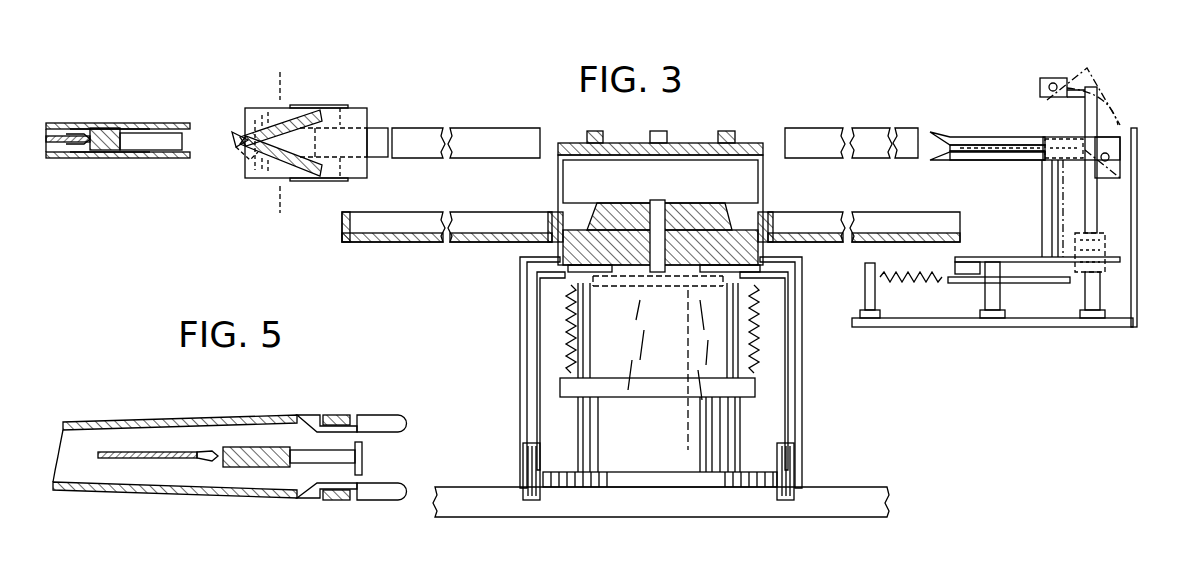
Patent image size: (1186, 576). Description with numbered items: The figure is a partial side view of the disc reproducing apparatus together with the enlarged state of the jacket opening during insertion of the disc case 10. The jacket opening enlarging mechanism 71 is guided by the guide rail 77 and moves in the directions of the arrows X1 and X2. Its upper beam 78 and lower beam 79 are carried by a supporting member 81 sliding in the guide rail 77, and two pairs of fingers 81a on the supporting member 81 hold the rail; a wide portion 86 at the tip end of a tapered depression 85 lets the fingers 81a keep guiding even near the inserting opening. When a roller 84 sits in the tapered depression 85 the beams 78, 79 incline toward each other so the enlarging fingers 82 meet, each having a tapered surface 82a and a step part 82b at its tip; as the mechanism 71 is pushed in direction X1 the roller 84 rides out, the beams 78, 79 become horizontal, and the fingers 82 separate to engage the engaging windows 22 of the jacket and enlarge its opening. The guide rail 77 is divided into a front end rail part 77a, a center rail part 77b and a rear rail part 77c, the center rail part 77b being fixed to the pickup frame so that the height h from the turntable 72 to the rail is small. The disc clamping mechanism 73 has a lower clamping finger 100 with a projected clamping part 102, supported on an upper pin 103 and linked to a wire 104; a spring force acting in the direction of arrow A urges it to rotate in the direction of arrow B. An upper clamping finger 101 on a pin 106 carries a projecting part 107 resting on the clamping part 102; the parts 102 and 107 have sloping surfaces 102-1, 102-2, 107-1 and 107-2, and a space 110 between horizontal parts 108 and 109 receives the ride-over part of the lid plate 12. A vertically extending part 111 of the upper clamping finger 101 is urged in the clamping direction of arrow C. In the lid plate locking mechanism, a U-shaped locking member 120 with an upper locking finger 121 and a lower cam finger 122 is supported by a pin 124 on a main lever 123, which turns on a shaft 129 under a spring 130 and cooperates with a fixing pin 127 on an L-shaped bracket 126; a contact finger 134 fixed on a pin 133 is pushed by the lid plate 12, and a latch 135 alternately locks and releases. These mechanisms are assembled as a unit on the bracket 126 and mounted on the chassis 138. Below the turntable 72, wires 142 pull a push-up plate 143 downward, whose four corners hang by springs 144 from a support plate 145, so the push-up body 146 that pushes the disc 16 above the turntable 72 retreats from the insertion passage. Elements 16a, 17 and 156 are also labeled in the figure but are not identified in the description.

In FIG. 3, the disc case 10 is at (108, 123).
In FIG. 5, the disc case 10 is at (111, 412).
In FIG. 3, the lid plate 12 is at (172, 150).
In FIG. 5, the lid plate 12 is at (363, 460).
In FIG. 3, the disc 16 is at (62, 142).
In FIG. 5, the disc 16 is at (130, 460).
In FIG. 3, the needle tip 16a is at (84, 144).
In FIG. 5, the needle tip 16a is at (205, 452).
In FIG. 3, the tube wall 17 is at (76, 123).
In FIG. 5, the tube wall 17 is at (215, 418).
In FIG. 3, the engaging windows 22 is at (134, 123).
In FIG. 5, the engaging windows 22 is at (300, 418).
In FIG. 3, the jacket opening enlarging mechanism 71 is at (315, 91).
In FIG. 5, the jacket opening enlarging mechanism 71 is at (378, 409).
In FIG. 3, the turntable 72 is at (452, 243).
In FIG. 3, the disc clamping mechanism 73 is at (971, 111).
In FIG. 3, the guide rail 77 is at (517, 123).
In FIG. 3, the front end rail part 77a is at (394, 128).
In FIG. 3, the center rail part 77b is at (445, 126).
In FIG. 3, the rear rail part 77c is at (900, 128).
In FIG. 3, the upper beam 78 is at (296, 108).
In FIG. 5, the upper beam 78 is at (403, 416).
In FIG. 3, the lower beam 79 is at (294, 170).
In FIG. 5, the lower beam 79 is at (382, 500).
In FIG. 3, the supporting member 81 is at (358, 115).
In FIG. 3, the fingers 81a is at (255, 112).
In FIG. 3, the enlarging finger 82 is at (267, 110).
In FIG. 5, the enlarging finger 82 is at (337, 415).
In FIG. 3, the tapered surface 82a is at (217, 137).
In FIG. 3, the step part 82b is at (246, 160).
In FIG. 3, the roller 84 is at (283, 142).
In FIG. 3, the tapered depression 85 is at (333, 142).
In FIG. 3, the wide portion 86 is at (248, 126).
In FIG. 3, the lower clamping finger 100 is at (1098, 96).
In FIG. 3, the upper clamping finger 101 is at (1050, 137).
In FIG. 3, the projected clamping part 102 is at (960, 160).
In FIG. 3, the sloping surface 102-1 is at (932, 160).
In FIG. 3, the sloping surface 102-2 is at (985, 162).
In FIG. 3, the upper pin 103 is at (1045, 80).
In FIG. 3, the wire 104 is at (1097, 140).
In FIG. 3, the pin 106 is at (1120, 172).
In FIG. 3, the projecting part 107 is at (938, 132).
In FIG. 3, the sloping surface 107-1 is at (932, 136).
In FIG. 3, the sloping surface 107-2 is at (985, 137).
In FIG. 3, the horizontal part 108 is at (1012, 210).
In FIG. 3, the horizontal part 109 is at (1025, 137).
In FIG. 3, the space 110 is at (1000, 162).
In FIG. 3, the vertically extending part 111 is at (1120, 236).
In FIG. 3, the locking member 120 is at (1114, 212).
In FIG. 3, the upper locking finger 121 is at (955, 258).
In FIG. 3, the lower cam finger 122 is at (1035, 275).
In FIG. 3, the main lever 123 is at (972, 283).
In FIG. 3, the pin 124 is at (1052, 228).
In FIG. 3, the L-shaped bracket 126 is at (925, 327).
In FIG. 3, the fixing pin 127 is at (985, 318).
In FIG. 3, the shaft 129 is at (1033, 318).
In FIG. 3, the spring 130 is at (912, 281).
In FIG. 3, the pin 133 is at (1048, 196).
In FIG. 3, the contact finger 134 is at (1010, 160).
In FIG. 3, the latch 135 is at (975, 258).
In FIG. 3, the chassis 138 is at (782, 515).
In FIG. 3, the wires 142 is at (537, 367).
In FIG. 3, the push-up plate 143 is at (660, 388).
In FIG. 3, the springs 144 is at (565, 350).
In FIG. 3, the support plate 145 is at (520, 328).
In FIG. 3, the push-up body 146 is at (730, 143).
In FIG. 3, the bottom plate 156 is at (641, 460).
In FIG. 3, the arrow A is at (1090, 165).
In FIG. 3, the arrow B is at (1038, 74).
In FIG. 3, the arrow C is at (1128, 138).
In FIG. 3, the arrow X1 is at (127, 210).
In FIG. 5, the arrow X1 is at (308, 366).
In FIG. 3, the arrow X2 is at (107, 233).
In FIG. 5, the arrow X2 is at (252, 392).
In FIG. 3, the height h is at (460, 160).